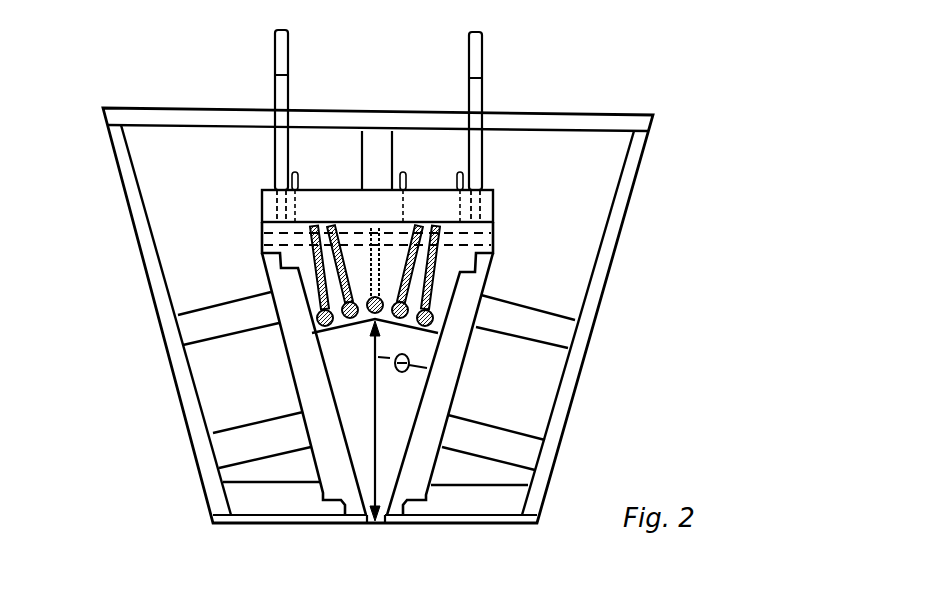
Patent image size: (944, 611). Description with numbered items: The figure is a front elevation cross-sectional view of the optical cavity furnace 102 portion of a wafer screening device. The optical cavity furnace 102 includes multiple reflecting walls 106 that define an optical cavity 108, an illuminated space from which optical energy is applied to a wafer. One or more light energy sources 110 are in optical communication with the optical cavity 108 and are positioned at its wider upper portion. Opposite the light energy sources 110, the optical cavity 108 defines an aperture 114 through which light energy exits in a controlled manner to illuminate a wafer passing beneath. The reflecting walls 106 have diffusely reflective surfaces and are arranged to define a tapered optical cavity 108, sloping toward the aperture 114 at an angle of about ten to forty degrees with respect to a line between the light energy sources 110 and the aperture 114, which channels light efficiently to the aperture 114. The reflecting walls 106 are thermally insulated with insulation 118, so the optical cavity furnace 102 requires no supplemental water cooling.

The optical cavity furnace 102 is at (442, 303).
The reflecting walls 106 is at (444, 392).
The optical cavity 108 is at (345, 378).
The light energy sources 110 is at (437, 313).
The aperture 114 is at (377, 522).
The insulation 118 is at (537, 253).